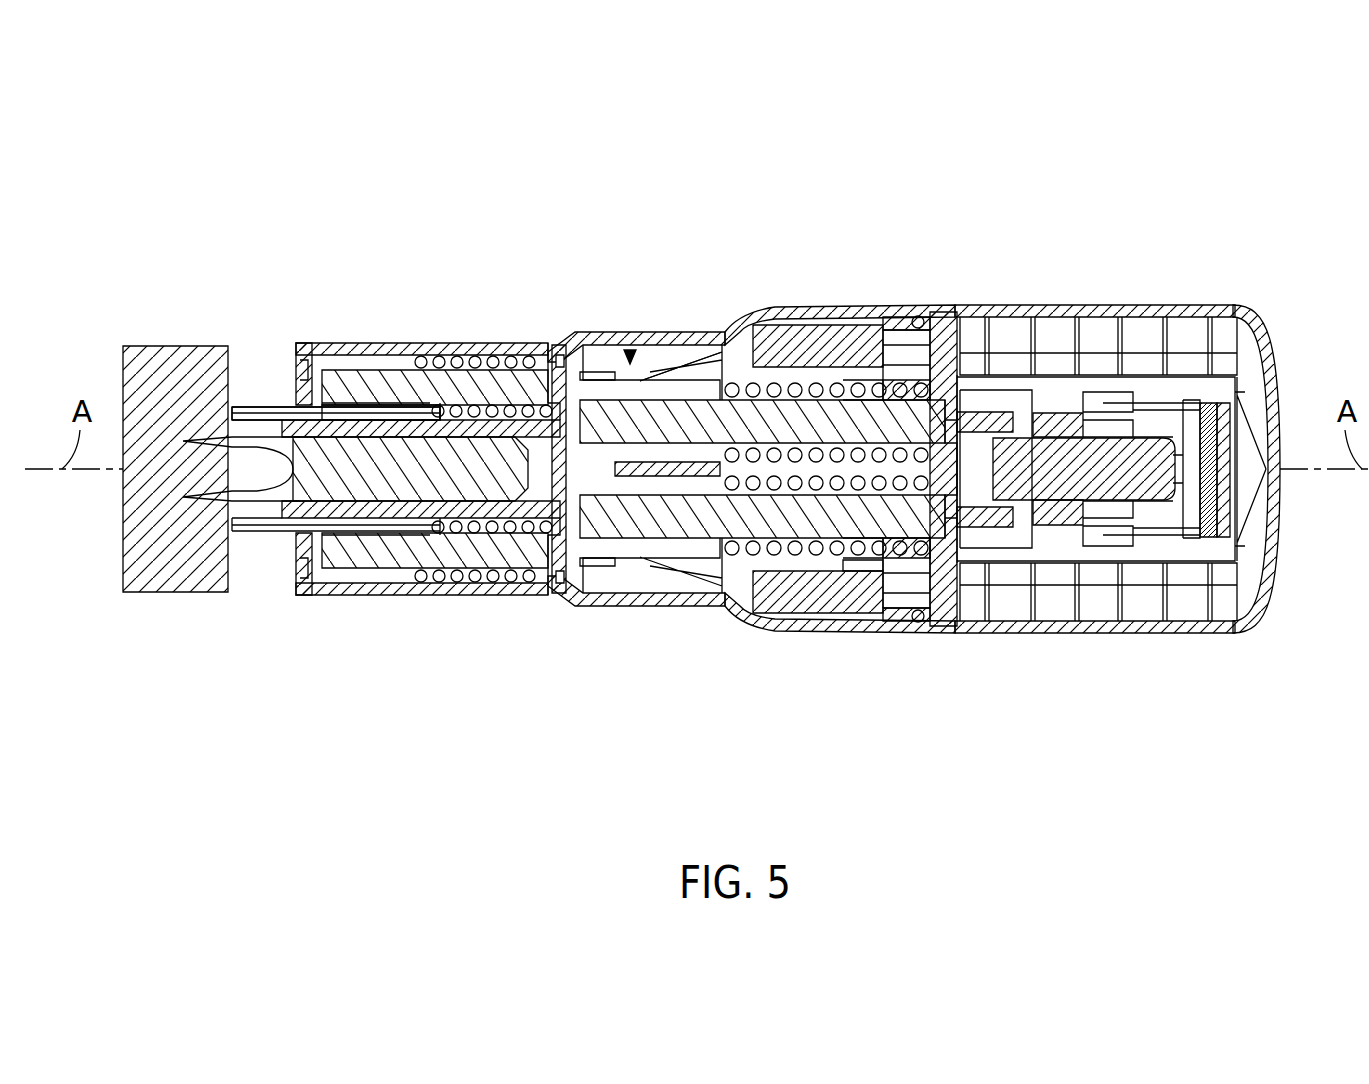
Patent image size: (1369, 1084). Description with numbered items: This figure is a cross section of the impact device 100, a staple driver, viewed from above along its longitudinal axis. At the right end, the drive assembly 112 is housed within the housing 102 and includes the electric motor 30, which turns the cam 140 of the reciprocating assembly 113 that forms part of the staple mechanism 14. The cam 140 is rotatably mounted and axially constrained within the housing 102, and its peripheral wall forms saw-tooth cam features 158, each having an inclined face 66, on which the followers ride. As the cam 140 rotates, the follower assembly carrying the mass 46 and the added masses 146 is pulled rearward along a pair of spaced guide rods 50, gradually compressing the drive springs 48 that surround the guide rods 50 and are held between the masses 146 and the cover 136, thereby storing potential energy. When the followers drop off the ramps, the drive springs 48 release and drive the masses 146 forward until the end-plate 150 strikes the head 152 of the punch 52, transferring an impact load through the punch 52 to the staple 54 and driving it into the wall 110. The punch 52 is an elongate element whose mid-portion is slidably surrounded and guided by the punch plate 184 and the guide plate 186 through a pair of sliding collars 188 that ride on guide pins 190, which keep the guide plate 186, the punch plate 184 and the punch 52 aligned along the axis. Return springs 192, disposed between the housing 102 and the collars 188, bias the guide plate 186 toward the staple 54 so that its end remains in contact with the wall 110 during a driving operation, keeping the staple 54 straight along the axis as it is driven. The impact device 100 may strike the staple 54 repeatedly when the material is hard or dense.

The impact device 100 is at (1187, 182).
The housing 102 is at (1276, 348).
The wall 110 is at (175, 355).
The drive assembly 112 is at (1290, 738).
The reciprocating assembly 113 is at (553, 197).
The staple mechanism 14 is at (262, 738).
The electric motor 30 is at (1057, 455).
The mass 46 is at (630, 350).
The drive spring 48 is at (886, 386).
The guide rod 50 is at (935, 340).
The punch 52 is at (358, 450).
The staple 54 is at (305, 548).
The inclined face 66 is at (840, 330).
The cover 136 is at (965, 320).
The cam 140 is at (790, 600).
The masses 146 is at (690, 372).
The end-plate 150 is at (585, 378).
The head 152 is at (610, 536).
The cam feature 158 is at (845, 603).
The punch plate 184 is at (437, 382).
The guide plate 186 is at (290, 416).
The sliding collar 188 is at (425, 560).
The guide pin 190 is at (518, 365).
The return spring 192 is at (470, 360).